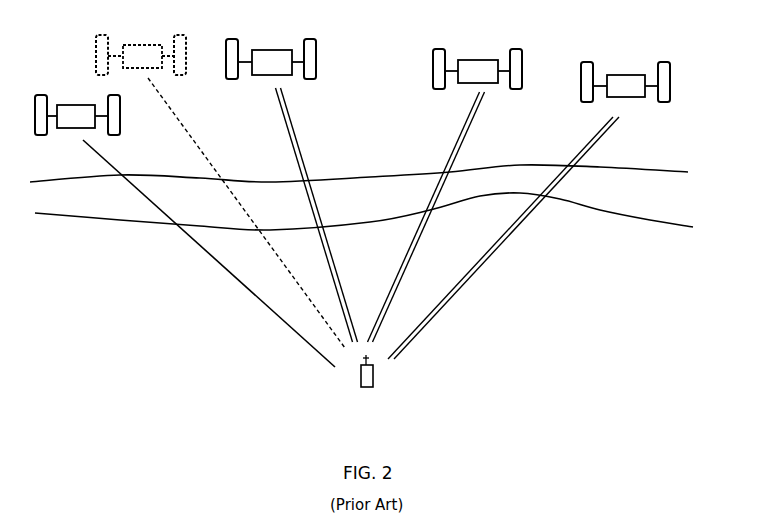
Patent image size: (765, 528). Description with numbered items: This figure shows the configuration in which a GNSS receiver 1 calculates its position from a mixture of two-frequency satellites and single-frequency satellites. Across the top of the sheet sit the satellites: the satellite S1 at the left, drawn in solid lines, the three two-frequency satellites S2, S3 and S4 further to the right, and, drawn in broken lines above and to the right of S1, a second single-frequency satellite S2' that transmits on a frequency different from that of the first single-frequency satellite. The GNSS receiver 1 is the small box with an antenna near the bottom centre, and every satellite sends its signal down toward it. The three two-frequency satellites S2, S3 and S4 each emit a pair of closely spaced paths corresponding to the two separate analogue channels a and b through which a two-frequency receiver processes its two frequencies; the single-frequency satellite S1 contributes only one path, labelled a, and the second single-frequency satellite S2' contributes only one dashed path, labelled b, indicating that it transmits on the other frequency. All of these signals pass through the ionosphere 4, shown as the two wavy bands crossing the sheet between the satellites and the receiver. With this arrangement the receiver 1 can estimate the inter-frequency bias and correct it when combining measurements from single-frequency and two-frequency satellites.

The GNSS receiver 1 is at (366, 390).
The ionosphere 4 is at (108, 209).
The analogue channel a is at (252, 293).
The analogue channel b is at (212, 158).
The satellite S1 is at (77, 115).
The two-frequency satellite S2 is at (271, 59).
The second single-frequency satellite S2' is at (141, 55).
The two-frequency satellite S3 is at (477, 69).
The two-frequency satellite S4 is at (625, 82).